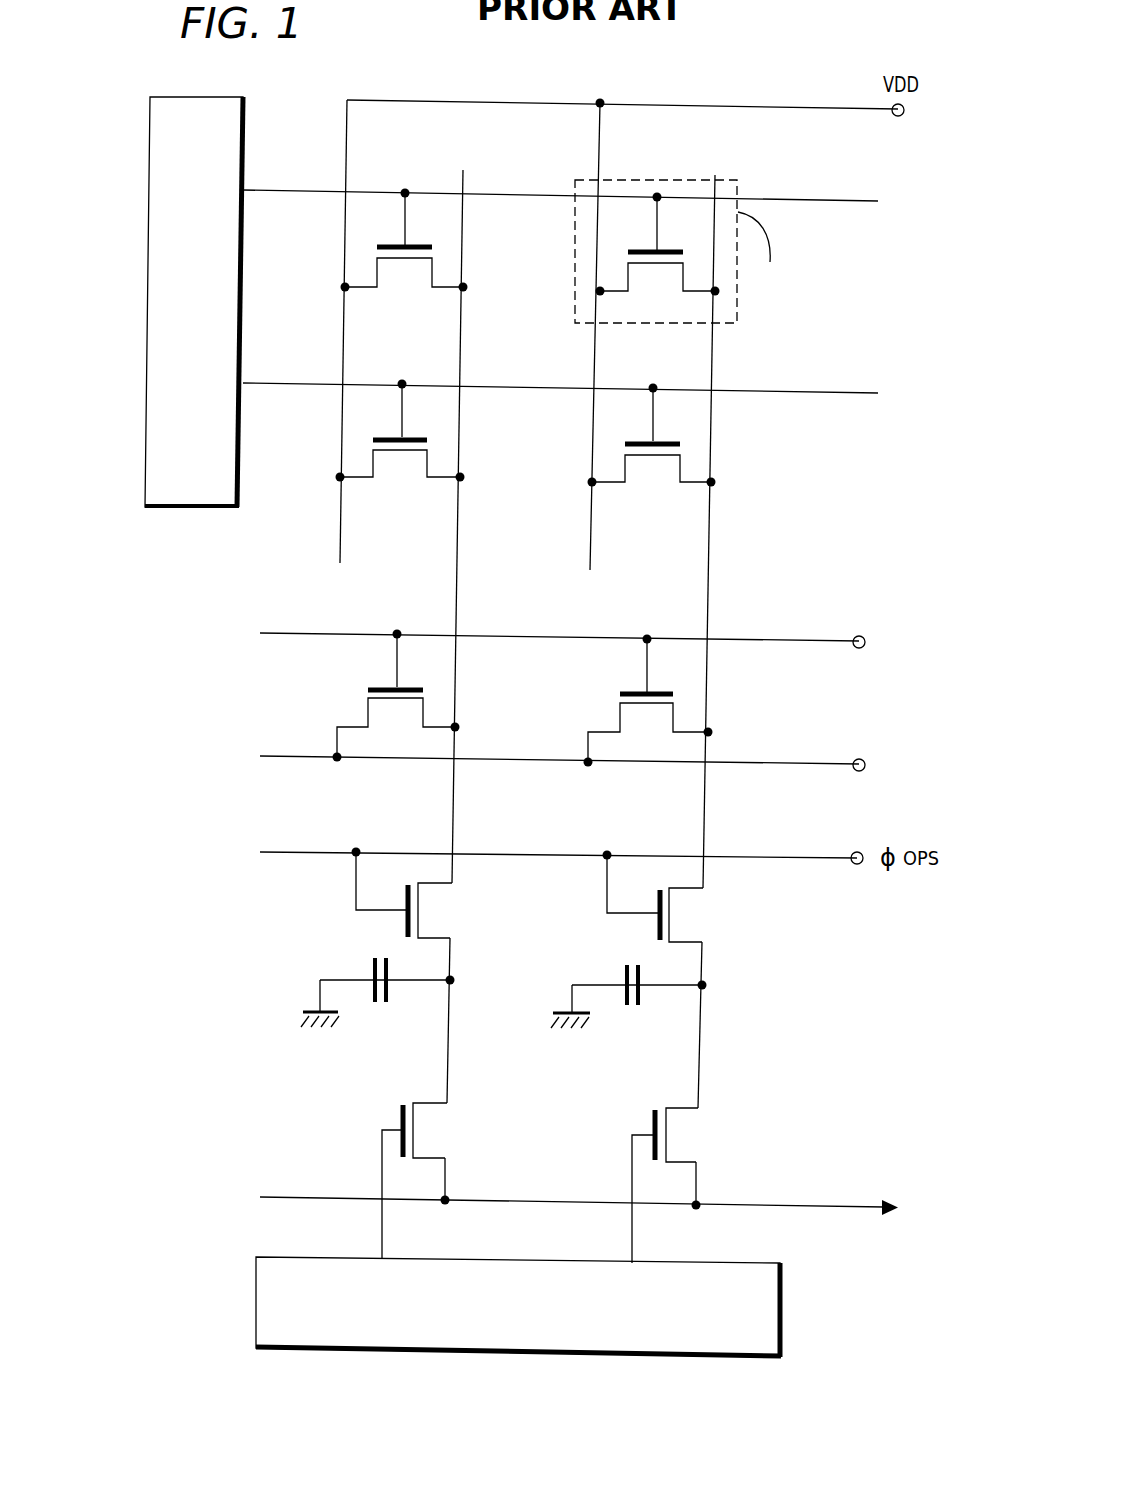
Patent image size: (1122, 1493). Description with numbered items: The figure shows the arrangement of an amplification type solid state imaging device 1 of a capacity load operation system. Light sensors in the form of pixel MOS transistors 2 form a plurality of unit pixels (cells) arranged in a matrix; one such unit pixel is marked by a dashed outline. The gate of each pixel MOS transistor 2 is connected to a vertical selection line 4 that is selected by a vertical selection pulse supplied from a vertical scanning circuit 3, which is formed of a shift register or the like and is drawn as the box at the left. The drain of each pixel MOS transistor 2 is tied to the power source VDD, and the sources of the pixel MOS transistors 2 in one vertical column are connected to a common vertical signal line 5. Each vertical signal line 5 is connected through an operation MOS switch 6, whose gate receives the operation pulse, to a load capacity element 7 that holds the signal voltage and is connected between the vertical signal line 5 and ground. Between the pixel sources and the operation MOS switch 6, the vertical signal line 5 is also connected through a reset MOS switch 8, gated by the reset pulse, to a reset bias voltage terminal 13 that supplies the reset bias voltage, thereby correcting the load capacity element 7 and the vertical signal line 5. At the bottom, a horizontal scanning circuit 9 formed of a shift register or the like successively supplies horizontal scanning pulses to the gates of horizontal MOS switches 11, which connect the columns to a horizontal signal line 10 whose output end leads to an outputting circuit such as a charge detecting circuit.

The amplification type solid state imaging device 1 is at (893, 352).
The pixel MOS transistor 2 is at (402, 275).
The vertical scanning circuit 3 is at (202, 510).
The vertical selection line 4 is at (512, 190).
The vertical signal line 5 is at (458, 560).
The operation MOS switch 6 is at (435, 908).
The load capacity element 7 is at (378, 1007).
The reset MOS switch 8 is at (366, 713).
The horizontal scanning circuit 9 is at (783, 1298).
The horizontal signal line 10 is at (853, 1210).
The horizontal MOS switch 11 is at (427, 1128).
The reset bias voltage terminal 13 is at (858, 756).